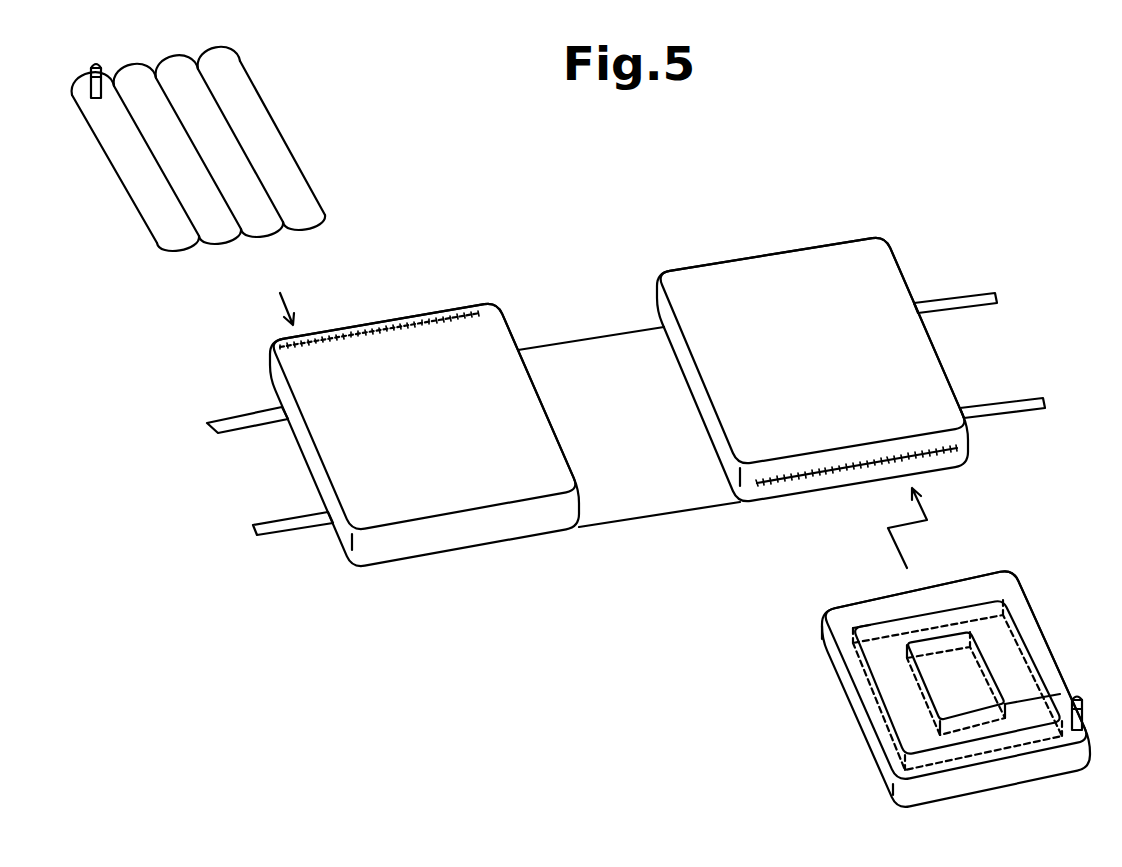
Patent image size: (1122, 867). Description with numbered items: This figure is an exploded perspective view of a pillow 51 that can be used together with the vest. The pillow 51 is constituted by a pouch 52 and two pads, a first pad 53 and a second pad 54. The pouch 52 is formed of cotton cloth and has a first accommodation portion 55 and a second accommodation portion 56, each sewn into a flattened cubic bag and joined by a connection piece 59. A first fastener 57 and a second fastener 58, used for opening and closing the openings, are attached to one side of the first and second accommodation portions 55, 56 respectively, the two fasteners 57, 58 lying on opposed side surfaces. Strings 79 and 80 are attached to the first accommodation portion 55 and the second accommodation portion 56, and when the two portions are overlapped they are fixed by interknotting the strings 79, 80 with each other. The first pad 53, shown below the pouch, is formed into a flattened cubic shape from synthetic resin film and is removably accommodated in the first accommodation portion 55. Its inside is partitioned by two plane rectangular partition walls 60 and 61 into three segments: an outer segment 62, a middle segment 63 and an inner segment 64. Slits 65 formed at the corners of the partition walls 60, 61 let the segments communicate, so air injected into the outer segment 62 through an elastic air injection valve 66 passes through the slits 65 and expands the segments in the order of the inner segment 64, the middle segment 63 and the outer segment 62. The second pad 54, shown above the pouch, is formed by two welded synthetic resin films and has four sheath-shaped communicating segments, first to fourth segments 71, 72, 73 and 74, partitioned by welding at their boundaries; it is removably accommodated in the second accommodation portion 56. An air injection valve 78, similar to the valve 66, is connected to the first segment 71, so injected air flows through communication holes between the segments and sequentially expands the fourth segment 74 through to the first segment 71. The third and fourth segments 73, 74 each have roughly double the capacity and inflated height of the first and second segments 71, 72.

The pillow 51 is at (621, 364).
The pouch 52 is at (603, 345).
The first pad 53 is at (939, 682).
The second pad 54 is at (183, 156).
The first accommodation portion 55 is at (812, 365).
The second accommodation portion 56 is at (424, 418).
The first fastener 57 is at (788, 483).
The second fastener 58 is at (408, 315).
The connection piece 59 is at (647, 505).
The partition wall 60 is at (935, 682).
The partition wall 61 is at (985, 715).
The outer segment 62 is at (822, 624).
The middle segment 63 is at (867, 630).
The inner segment 64 is at (917, 640).
The slit 65 is at (990, 595).
The air injection valve 66 is at (1079, 731).
The first segment 71 is at (177, 243).
The second segment 72 is at (219, 233).
The third segment 73 is at (263, 223).
The fourth segment 74 is at (307, 217).
The air injection valve 78 is at (90, 72).
The string 79 is at (978, 287).
The string 80 is at (218, 422).